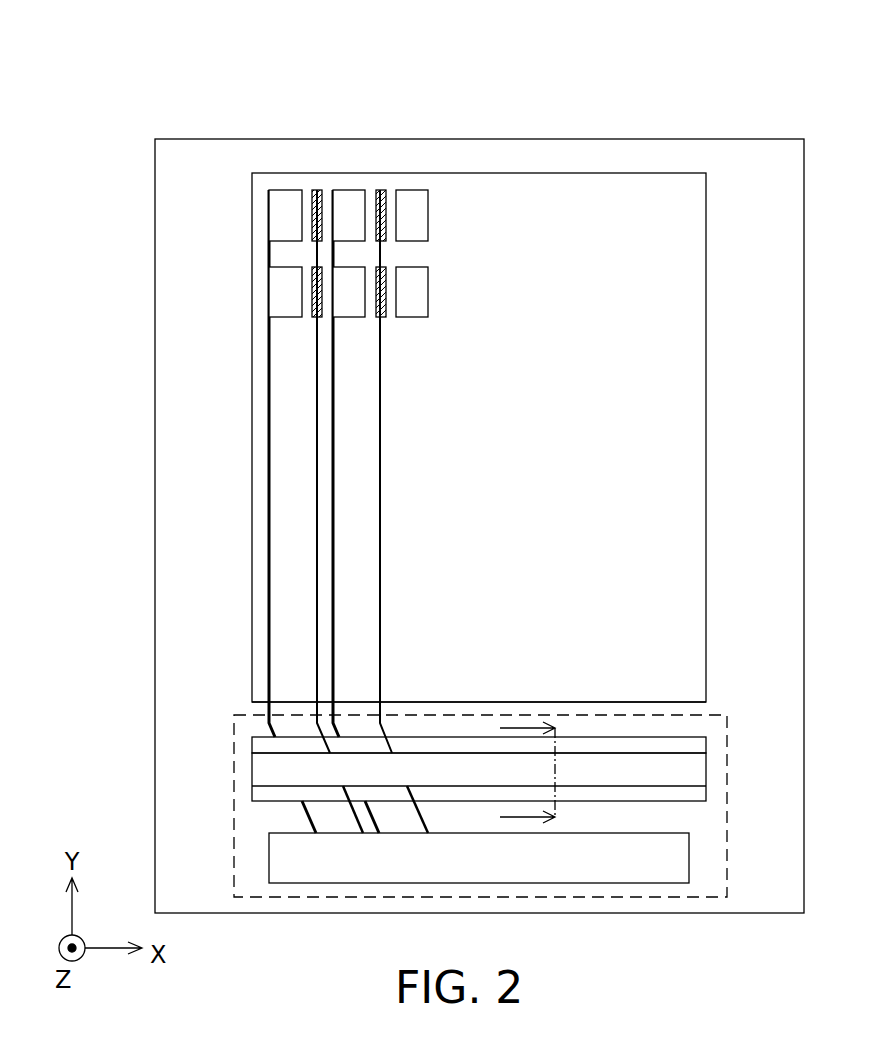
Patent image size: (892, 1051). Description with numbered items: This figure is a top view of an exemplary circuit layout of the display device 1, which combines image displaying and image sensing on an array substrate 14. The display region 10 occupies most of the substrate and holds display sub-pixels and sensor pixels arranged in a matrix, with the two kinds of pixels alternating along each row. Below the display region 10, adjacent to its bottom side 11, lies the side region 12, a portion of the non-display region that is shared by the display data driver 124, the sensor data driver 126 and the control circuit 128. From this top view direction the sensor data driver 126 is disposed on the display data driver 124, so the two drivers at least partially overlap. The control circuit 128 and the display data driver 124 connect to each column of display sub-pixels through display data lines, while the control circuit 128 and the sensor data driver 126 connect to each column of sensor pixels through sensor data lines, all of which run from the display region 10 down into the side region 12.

The display device 1 is at (612, 88).
The array substrate 14 is at (742, 139).
The display region 10 is at (706, 307).
The bottom side 11 is at (630, 702).
The side region 12 is at (234, 722).
The sensor data driver 126 is at (695, 752).
The display data driver 124 is at (695, 801).
The control circuit 128 is at (500, 872).